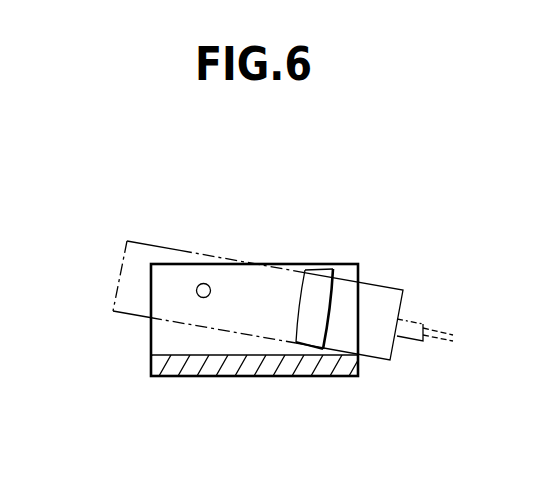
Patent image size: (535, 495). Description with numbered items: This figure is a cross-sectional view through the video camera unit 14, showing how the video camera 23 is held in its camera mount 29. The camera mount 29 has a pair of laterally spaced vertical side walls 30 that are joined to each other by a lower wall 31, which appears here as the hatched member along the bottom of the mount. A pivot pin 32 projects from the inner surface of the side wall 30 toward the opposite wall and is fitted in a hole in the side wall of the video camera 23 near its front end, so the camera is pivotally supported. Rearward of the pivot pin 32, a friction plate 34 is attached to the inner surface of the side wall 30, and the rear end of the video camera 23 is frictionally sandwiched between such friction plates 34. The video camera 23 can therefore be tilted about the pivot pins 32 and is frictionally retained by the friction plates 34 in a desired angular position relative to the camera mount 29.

The video camera unit 14 is at (392, 278).
The video camera 23 is at (123, 313).
The camera mount 29 is at (258, 378).
The side wall 30 is at (157, 332).
The lower wall 31 is at (212, 367).
The pivot pin 32 is at (204, 284).
The friction plate 34 is at (317, 289).